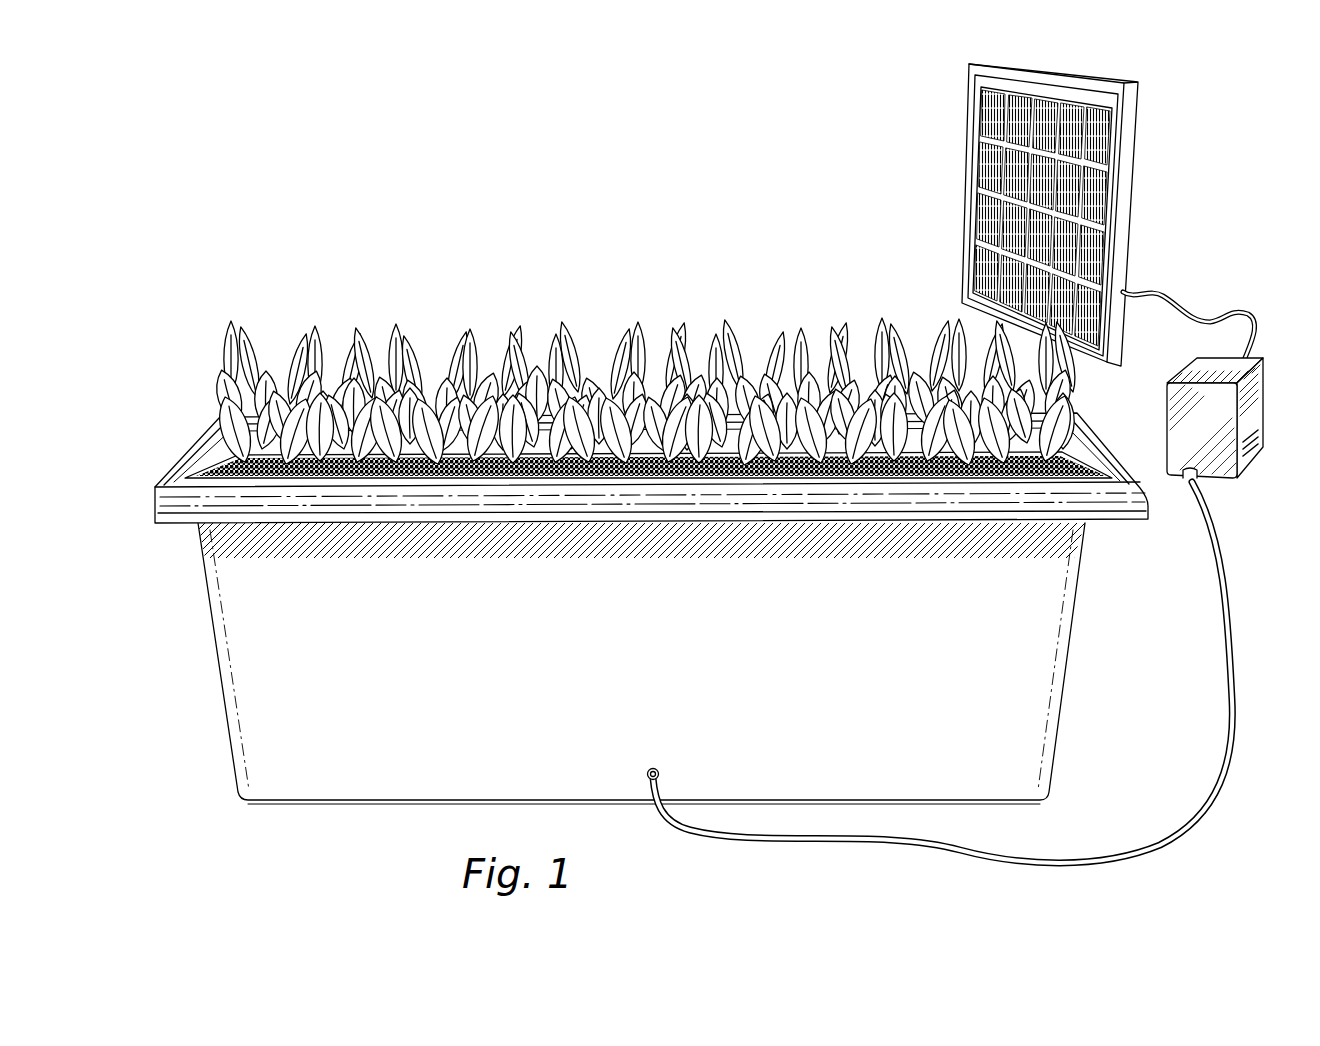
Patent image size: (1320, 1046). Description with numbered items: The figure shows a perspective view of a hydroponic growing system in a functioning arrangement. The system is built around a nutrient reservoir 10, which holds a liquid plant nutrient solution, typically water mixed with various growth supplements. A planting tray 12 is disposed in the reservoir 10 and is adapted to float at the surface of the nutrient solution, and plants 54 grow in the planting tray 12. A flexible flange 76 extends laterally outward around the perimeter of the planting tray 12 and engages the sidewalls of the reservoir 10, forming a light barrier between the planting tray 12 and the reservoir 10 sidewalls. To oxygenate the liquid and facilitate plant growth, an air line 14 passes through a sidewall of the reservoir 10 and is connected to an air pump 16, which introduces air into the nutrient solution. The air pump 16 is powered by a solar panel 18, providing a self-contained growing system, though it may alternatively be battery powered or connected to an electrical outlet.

The nutrient reservoir 10 is at (248, 665).
The planting tray 12 is at (641, 350).
The air line 14 is at (1163, 832).
The air pump 16 is at (1215, 437).
The solar panel 18 is at (1132, 92).
The plants 54 is at (540, 312).
The flexible flange 76 is at (210, 462).